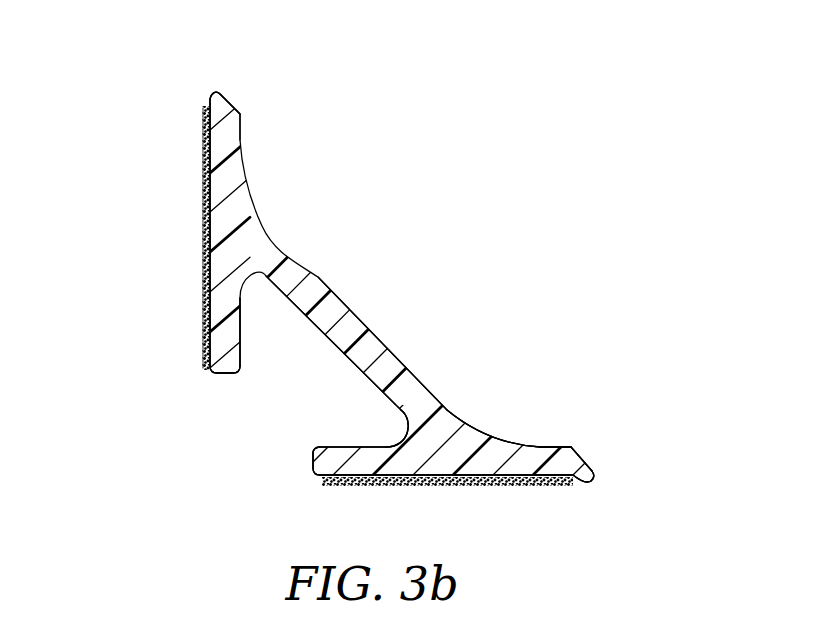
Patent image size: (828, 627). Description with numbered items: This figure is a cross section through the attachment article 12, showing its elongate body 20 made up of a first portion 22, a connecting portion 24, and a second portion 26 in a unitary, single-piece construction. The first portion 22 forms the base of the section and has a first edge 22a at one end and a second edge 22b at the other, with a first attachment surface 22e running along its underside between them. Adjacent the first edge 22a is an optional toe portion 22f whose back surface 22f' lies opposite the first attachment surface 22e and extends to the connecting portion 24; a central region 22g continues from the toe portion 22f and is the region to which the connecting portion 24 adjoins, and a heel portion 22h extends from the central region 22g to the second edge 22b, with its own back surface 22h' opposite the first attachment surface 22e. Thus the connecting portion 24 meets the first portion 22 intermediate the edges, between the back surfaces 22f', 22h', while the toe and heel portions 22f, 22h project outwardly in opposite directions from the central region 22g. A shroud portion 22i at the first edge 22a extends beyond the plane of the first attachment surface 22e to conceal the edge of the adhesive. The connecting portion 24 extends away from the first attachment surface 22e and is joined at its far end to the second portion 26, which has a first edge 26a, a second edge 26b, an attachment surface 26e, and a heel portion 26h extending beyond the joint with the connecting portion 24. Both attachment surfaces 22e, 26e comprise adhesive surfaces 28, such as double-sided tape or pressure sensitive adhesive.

The attachment article 12 is at (128, 147).
The elongate body 20 is at (322, 274).
The first portion 22 is at (492, 452).
The first edge 22a is at (597, 470).
The second edge 22b is at (312, 470).
The first attachment surface 22e is at (437, 483).
The toe portion 22f is at (604, 429).
The back surface 22f' is at (556, 417).
The central region 22g is at (446, 427).
The heel portion 22h is at (277, 448).
The back surface 22h' is at (368, 416).
The shroud portion 22i is at (592, 481).
The connecting portion 24 is at (324, 318).
The second portion 26 is at (232, 168).
The first edge 26a is at (223, 96).
The second edge 26b is at (221, 376).
The attachment surface 26e is at (207, 210).
The heel portion 26h is at (222, 333).
The adhesive surfaces 28 is at (207, 257).